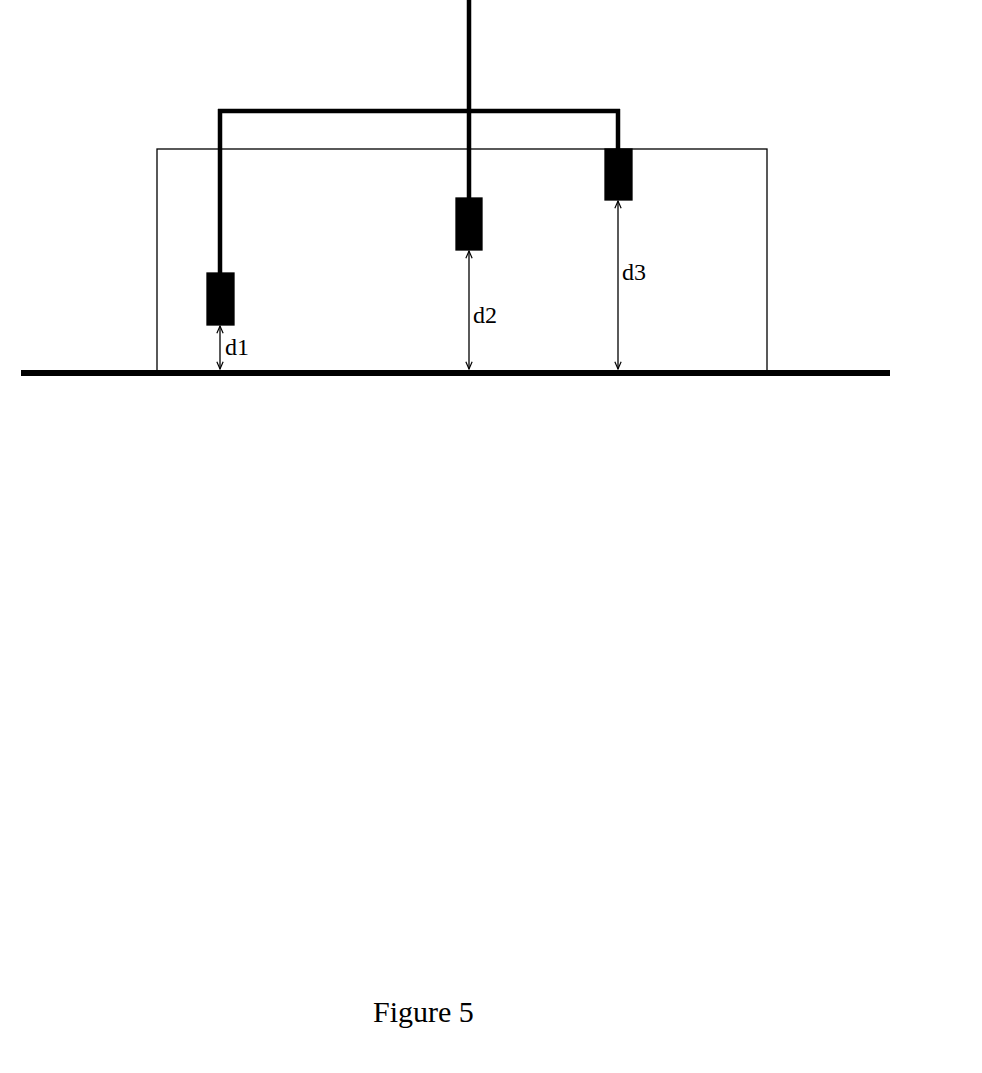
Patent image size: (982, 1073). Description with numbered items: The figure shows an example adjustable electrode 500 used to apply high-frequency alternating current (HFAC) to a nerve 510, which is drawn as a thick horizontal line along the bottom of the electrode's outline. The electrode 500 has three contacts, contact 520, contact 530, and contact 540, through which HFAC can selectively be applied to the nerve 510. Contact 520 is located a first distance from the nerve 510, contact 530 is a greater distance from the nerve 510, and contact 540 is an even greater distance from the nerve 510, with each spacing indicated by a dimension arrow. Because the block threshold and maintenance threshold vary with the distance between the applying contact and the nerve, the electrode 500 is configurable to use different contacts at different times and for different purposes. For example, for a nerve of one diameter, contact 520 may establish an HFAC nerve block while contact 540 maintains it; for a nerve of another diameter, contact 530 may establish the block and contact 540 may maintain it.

The adjustable electrode 500 is at (671, 146).
The nerve 510 is at (833, 369).
The contact 520 is at (237, 294).
The contact 530 is at (454, 226).
The contact 540 is at (602, 176).